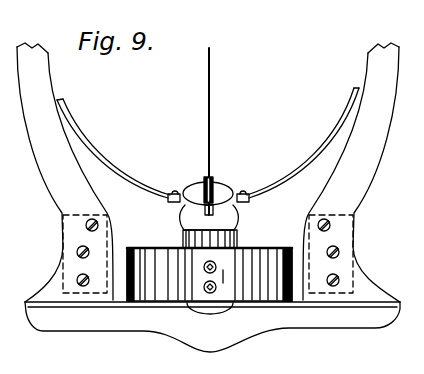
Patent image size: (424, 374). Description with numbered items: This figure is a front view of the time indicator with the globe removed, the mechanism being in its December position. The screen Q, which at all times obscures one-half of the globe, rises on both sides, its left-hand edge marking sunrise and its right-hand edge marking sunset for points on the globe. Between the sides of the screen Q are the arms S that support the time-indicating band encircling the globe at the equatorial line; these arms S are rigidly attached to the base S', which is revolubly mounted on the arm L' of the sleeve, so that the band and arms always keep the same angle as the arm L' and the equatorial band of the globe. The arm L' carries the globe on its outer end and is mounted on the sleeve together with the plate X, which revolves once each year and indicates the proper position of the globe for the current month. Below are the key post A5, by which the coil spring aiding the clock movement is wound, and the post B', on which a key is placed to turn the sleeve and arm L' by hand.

The screen Q is at (208, 172).
The arm S is at (208, 131).
The base S' is at (213, 183).
The arm L' is at (216, 226).
The key post A5 is at (205, 263).
The plate X is at (257, 248).
The post B' is at (228, 303).